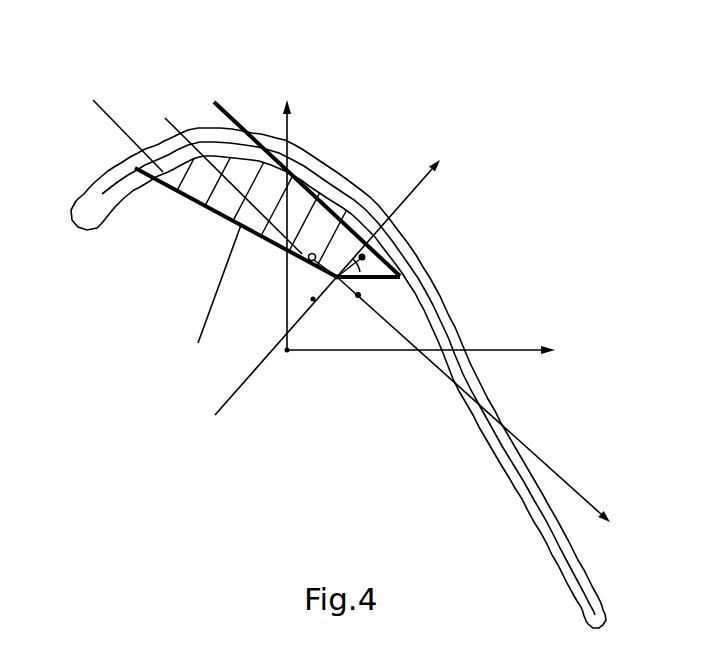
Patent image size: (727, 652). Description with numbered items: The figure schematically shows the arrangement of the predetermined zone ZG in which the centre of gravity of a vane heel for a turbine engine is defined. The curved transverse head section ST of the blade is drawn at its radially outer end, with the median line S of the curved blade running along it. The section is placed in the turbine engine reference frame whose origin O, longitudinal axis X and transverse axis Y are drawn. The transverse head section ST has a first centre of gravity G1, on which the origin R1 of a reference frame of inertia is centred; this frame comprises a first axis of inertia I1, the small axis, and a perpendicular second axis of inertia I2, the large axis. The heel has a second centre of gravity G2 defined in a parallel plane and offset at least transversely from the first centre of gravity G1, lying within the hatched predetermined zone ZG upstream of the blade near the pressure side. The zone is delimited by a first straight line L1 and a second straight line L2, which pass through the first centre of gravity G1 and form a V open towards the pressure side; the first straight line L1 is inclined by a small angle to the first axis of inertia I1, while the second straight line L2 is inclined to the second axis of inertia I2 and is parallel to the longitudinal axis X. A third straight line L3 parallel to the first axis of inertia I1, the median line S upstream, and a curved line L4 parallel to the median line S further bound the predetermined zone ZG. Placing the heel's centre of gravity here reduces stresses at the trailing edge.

The median line S is at (116, 190).
The transverse head section ST is at (100, 187).
The predetermined zone ZG is at (223, 203).
The first straight line L1 is at (262, 238).
The second straight line L2 is at (382, 277).
The third straight line L3 is at (226, 112).
The curved line L4 is at (187, 166).
The longitudinal axis X is at (428, 363).
The transverse axis Y is at (296, 218).
The origin O is at (285, 364).
The first axis of inertia I1 is at (481, 399).
The second axis of inertia I2 is at (339, 287).
The first centre of gravity G1 is at (337, 280).
The origin of the reference frame of inertia R1 is at (358, 295).
The second centre of gravity G2 is at (312, 253).